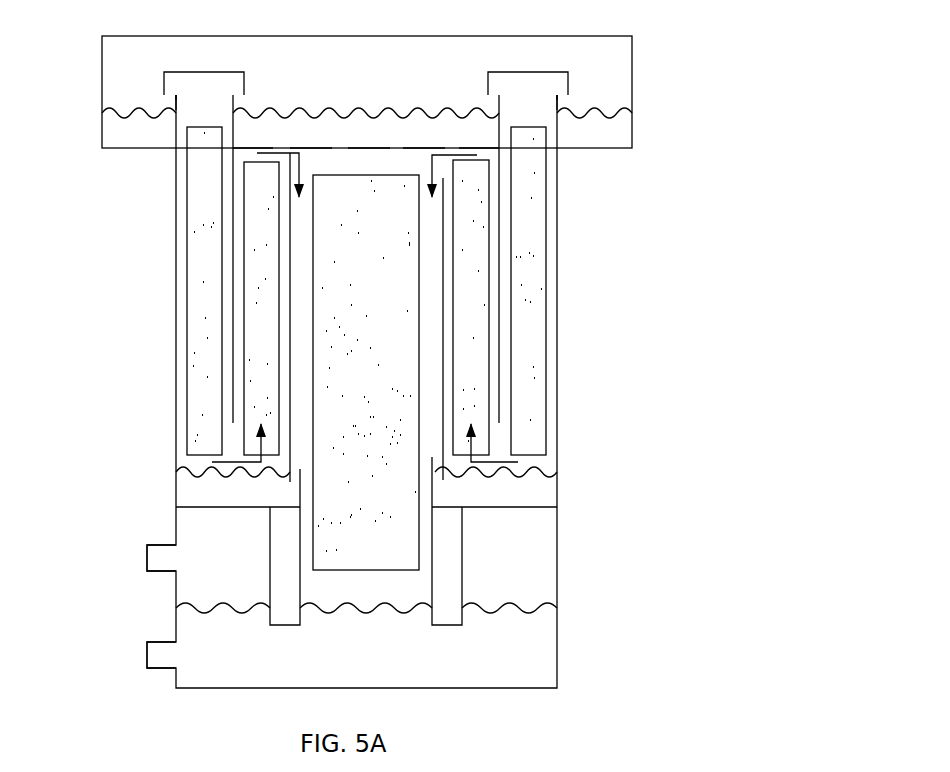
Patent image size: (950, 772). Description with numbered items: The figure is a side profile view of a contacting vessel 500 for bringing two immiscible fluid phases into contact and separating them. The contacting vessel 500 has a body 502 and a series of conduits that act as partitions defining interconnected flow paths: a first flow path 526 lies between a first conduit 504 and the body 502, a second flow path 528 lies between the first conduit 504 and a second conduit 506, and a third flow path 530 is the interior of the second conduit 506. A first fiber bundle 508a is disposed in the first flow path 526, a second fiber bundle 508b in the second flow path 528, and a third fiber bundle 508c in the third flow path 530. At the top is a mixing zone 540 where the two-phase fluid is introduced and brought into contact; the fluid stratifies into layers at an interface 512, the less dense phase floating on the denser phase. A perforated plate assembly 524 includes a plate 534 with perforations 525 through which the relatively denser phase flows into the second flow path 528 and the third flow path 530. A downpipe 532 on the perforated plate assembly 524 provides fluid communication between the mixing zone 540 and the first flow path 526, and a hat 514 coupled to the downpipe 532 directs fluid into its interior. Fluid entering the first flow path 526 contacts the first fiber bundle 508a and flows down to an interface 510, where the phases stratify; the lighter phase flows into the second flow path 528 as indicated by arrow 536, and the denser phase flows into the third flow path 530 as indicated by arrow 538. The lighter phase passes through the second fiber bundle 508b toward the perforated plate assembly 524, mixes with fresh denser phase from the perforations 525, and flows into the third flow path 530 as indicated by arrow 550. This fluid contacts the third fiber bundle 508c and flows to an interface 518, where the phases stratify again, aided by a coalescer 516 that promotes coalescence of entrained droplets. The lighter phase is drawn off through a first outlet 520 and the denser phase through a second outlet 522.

The contacting vessel 500 is at (713, 58).
The body 502 is at (557, 337).
The first conduit 504 is at (233, 185).
The second conduit 506 is at (290, 265).
The first fiber bundle 508a is at (258, 403).
The second fiber bundle 508b is at (198, 355).
The third fiber bundle 508c is at (345, 520).
The interface 510 is at (200, 480).
The interface 512 is at (617, 118).
The hat 514 is at (165, 82).
The coalescer 516 is at (450, 607).
The interface 518 is at (538, 612).
The first outlet 520 is at (163, 545).
The second outlet 522 is at (160, 668).
The perforated plate assembly 524 is at (383, 137).
The perforations 525 is at (320, 137).
The first flow path 526 is at (523, 226).
The second flow path 528 is at (468, 339).
The third flow path 530 is at (347, 336).
The downpipe 532 is at (235, 105).
The plate 534 is at (615, 143).
The arrow 536 is at (200, 472).
The arrow 538 is at (428, 459).
The mixing zone 540 is at (603, 62).
The arrow 550 is at (257, 153).